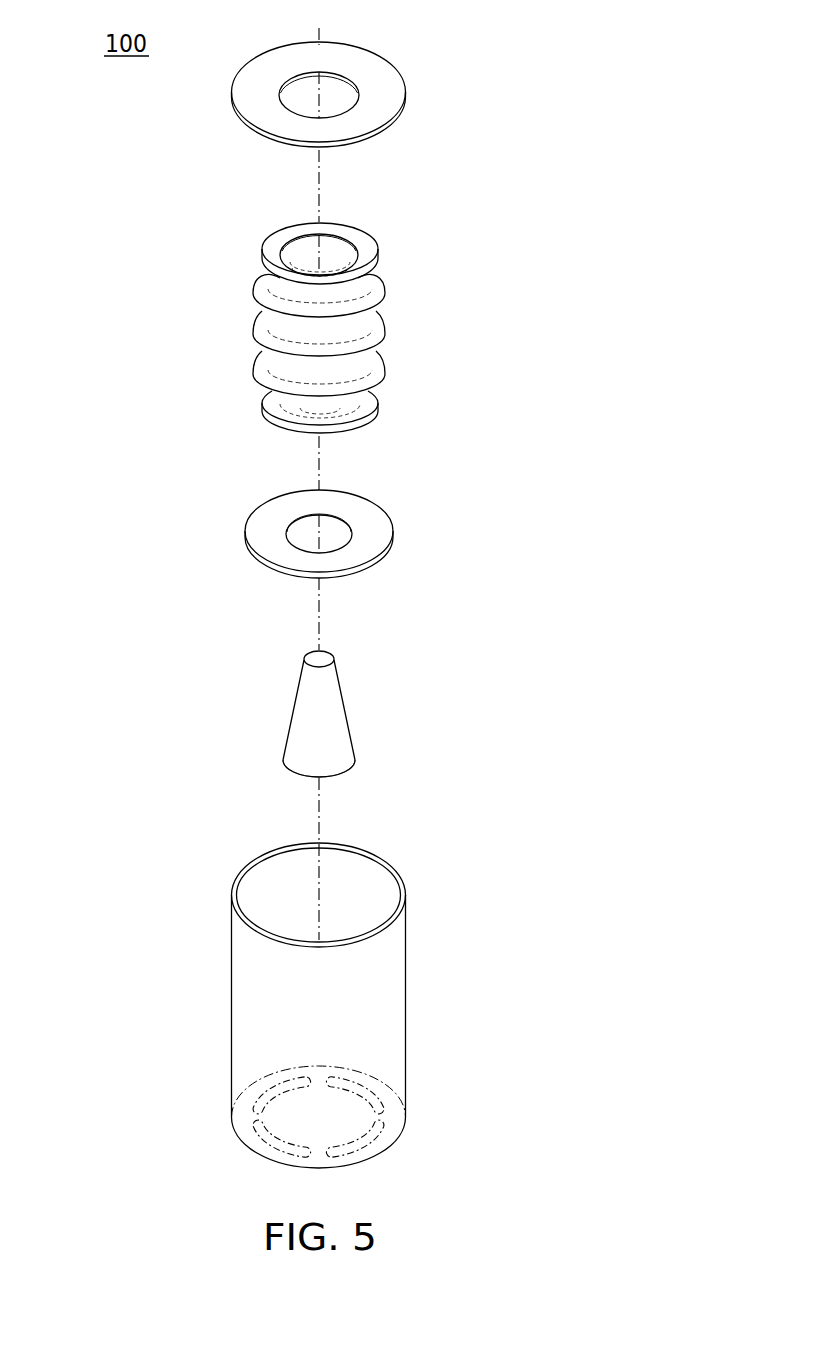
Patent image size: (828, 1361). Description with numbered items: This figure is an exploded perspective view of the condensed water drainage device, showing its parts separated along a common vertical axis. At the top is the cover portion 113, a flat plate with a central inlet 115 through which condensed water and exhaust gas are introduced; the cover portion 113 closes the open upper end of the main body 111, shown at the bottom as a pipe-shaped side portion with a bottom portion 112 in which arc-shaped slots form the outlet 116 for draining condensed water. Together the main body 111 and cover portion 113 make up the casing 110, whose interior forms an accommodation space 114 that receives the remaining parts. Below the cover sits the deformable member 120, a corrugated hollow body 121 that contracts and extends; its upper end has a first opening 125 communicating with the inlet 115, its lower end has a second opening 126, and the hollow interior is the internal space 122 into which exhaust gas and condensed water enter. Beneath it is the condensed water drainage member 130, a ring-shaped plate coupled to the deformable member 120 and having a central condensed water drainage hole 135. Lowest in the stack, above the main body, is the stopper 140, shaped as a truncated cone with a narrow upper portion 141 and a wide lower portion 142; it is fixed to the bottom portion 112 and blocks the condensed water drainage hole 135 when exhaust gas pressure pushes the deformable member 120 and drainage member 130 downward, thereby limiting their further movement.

The casing 110 is at (598, 779).
The main body 111 is at (358, 1022).
The bottom portion 112 is at (358, 1134).
The cover portion 113 is at (351, 74).
The accommodation space 114 is at (355, 895).
The inlet 115 is at (335, 75).
The outlet 116 is at (362, 1149).
The deformable member 120 is at (214, 327).
The body 121 is at (370, 340).
The internal space 122 is at (366, 223).
The first opening 125 is at (333, 233).
The second opening 126 is at (350, 434).
The condensed water drainage member 130 is at (362, 511).
The condensed water drainage hole 135 is at (335, 515).
The stopper 140 is at (359, 721).
The narrow upper portion 141 is at (330, 653).
The wide lower portion 142 is at (340, 775).